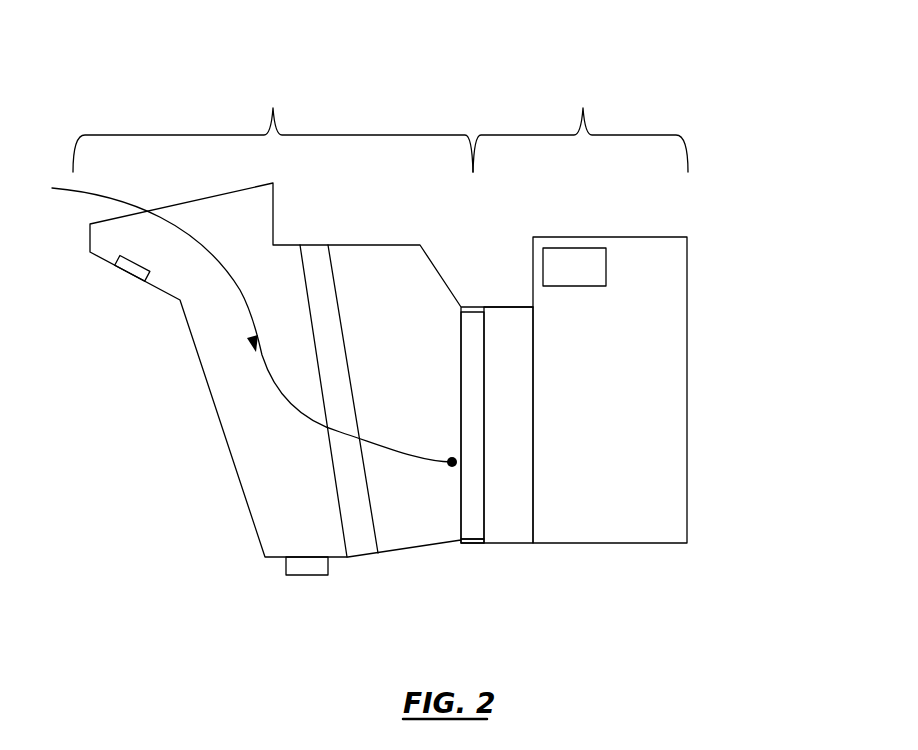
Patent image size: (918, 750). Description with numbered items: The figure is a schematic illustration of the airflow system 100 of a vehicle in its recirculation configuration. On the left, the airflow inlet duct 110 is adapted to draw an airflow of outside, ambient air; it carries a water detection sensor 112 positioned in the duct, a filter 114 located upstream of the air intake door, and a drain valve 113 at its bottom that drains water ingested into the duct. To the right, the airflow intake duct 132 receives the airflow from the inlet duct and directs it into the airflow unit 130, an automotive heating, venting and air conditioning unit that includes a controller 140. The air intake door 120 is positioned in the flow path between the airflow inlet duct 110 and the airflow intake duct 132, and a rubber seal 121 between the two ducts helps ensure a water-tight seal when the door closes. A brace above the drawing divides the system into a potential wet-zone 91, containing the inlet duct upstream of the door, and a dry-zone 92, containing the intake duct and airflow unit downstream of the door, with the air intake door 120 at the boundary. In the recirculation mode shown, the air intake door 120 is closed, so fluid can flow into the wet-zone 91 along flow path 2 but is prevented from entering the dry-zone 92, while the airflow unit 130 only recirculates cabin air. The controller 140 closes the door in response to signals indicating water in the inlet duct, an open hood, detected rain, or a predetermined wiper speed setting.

The airflow system 100 is at (484, 86).
The wet-zone 91 is at (273, 124).
The dry-zone 92 is at (580, 124).
The airflow inlet duct 110 is at (200, 367).
The water detection sensor 112 is at (125, 262).
The drain valve 113 is at (300, 568).
The filter 114 is at (325, 272).
The air intake door 120 is at (471, 455).
The rubber seal 121 is at (469, 545).
The airflow unit 130 is at (688, 265).
The airflow intake duct 132 is at (515, 535).
The controller 140 is at (575, 257).
The flow path 2 is at (292, 402).